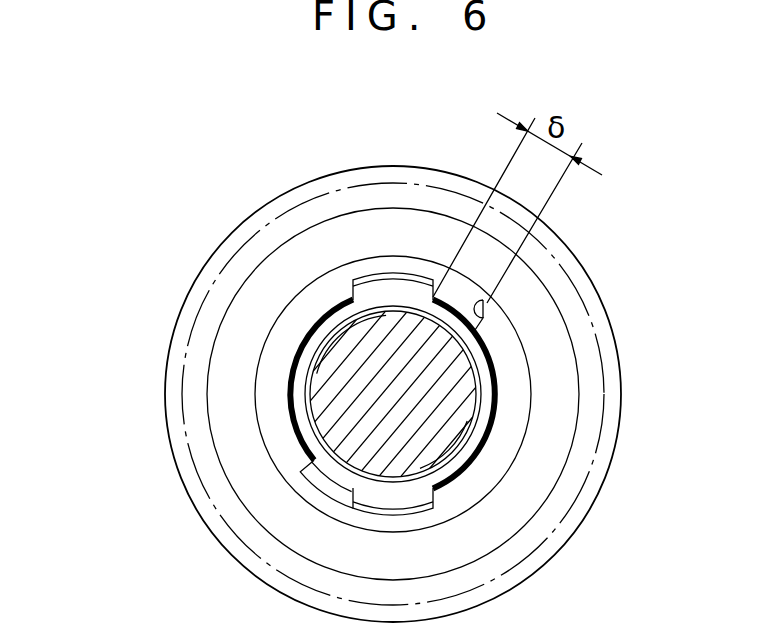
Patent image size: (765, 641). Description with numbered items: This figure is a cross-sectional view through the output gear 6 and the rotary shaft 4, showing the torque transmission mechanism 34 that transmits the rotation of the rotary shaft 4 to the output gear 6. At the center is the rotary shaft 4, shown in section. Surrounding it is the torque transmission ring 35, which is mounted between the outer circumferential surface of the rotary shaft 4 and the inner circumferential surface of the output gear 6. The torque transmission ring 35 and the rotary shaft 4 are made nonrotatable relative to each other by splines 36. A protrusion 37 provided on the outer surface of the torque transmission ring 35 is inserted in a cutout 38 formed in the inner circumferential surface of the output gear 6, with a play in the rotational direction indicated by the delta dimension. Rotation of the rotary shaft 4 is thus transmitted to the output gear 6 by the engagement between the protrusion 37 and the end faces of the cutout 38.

The rotary shaft 4 is at (342, 413).
The output gear 6 is at (205, 273).
The torque transmission mechanism 34 is at (285, 297).
The torque transmission ring 35 is at (290, 364).
The splines 36 is at (310, 398).
The protrusion 37 is at (390, 288).
The cutout 38 is at (485, 316).